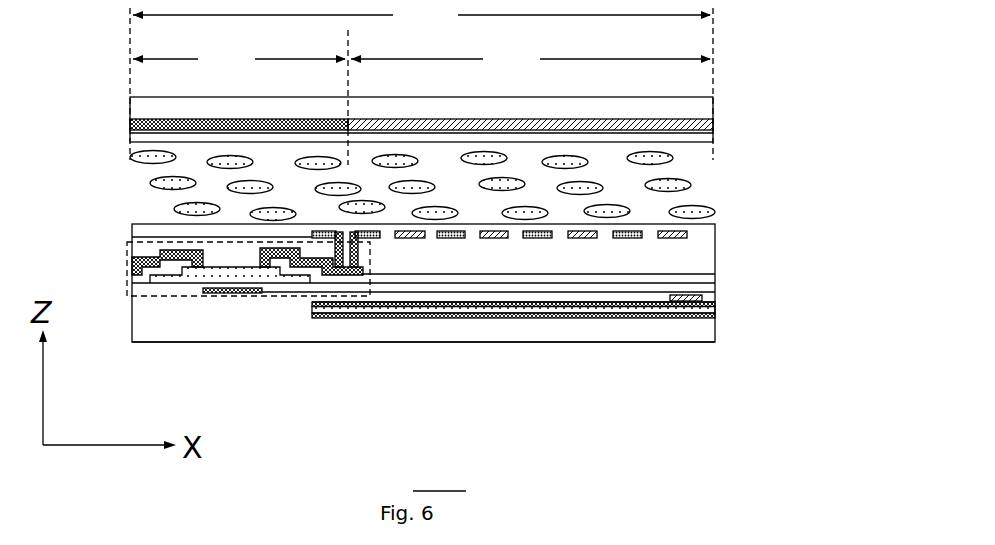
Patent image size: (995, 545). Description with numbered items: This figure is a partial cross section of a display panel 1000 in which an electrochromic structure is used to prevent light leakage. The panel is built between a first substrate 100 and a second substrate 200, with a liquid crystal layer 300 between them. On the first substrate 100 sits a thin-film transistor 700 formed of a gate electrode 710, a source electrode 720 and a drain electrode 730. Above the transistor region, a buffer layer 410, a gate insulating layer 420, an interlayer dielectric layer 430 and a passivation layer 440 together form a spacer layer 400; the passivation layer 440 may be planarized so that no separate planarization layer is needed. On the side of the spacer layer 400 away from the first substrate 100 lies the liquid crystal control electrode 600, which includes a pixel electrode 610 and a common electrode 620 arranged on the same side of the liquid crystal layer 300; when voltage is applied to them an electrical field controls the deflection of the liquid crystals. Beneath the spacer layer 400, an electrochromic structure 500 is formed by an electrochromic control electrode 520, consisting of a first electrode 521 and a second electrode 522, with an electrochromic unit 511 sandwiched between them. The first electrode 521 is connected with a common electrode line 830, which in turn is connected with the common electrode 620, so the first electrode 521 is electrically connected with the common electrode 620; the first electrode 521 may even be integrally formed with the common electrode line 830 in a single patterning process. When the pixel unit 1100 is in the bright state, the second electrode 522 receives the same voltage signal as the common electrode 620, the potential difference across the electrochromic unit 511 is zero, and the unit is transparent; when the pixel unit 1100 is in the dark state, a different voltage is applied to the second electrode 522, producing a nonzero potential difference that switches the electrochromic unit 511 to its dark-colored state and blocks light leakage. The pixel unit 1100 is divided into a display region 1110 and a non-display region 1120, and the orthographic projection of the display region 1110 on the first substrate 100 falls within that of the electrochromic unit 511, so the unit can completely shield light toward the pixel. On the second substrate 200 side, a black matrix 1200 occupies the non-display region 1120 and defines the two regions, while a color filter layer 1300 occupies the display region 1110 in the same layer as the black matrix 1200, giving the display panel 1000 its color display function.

The display panel 1000 is at (439, 481).
The pixel unit 1100 is at (421, 15).
The display region 1110 is at (530, 59).
The non-display region 1120 is at (239, 59).
The black matrix 1200 is at (150, 123).
The color filter layer 1300 is at (541, 128).
The first substrate 100 is at (353, 330).
The second substrate 200 is at (413, 98).
The liquid crystal layer 300 is at (668, 183).
The spacer layer 400 is at (480, 283).
The buffer layer 410 is at (542, 311).
The gate insulating layer 420 is at (697, 289).
The interlayer dielectric layer 430 is at (680, 280).
The passivation layer 440 is at (678, 263).
The electrochromic structure 500 is at (527, 371).
The electrochromic unit 511 is at (585, 308).
The electrochromic control electrode 520 is at (513, 371).
The first electrode 521 is at (515, 303).
The second electrode 522 is at (500, 316).
The liquid crystal control electrode 600 is at (568, 196).
The pixel electrode 610 is at (633, 232).
The common electrode 620 is at (673, 233).
The thin-film transistor 700 is at (200, 299).
The gate electrode 710 is at (230, 296).
The source electrode 720 is at (133, 260).
The drain electrode 730 is at (325, 275).
The common electrode line 830 is at (692, 304).